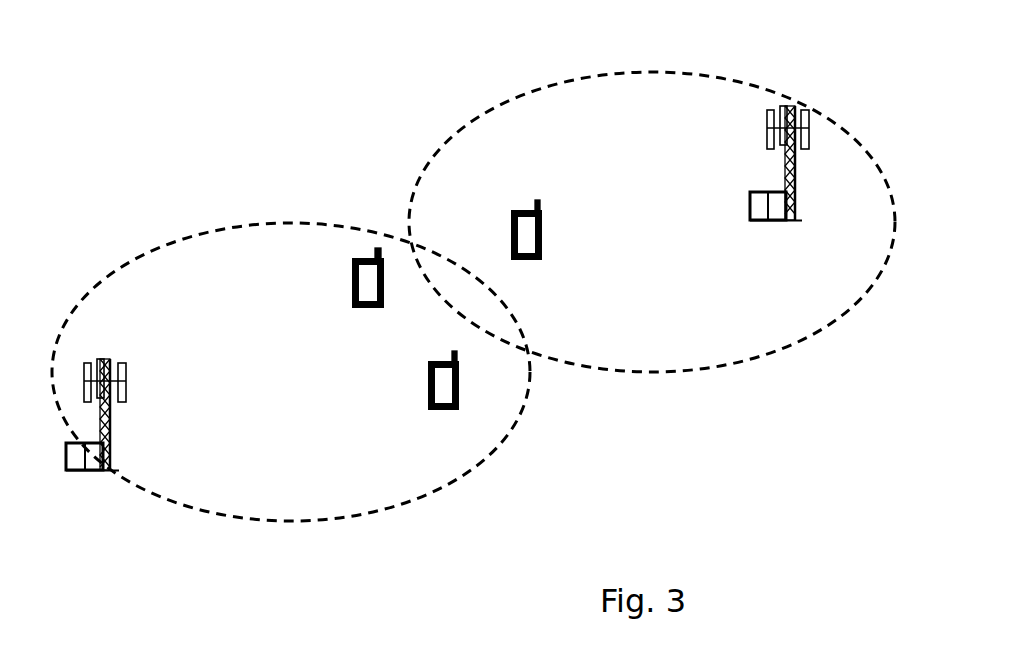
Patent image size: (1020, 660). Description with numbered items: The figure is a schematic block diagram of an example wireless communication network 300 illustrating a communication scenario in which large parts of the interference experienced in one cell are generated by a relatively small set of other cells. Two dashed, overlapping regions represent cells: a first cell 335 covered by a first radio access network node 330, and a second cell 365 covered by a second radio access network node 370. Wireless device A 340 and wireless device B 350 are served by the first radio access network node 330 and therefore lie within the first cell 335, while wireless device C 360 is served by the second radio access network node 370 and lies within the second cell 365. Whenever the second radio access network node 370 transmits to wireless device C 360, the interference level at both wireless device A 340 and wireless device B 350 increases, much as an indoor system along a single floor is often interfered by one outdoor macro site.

The wireless communication network 300 is at (133, 194).
The first radio access network node 330 is at (107, 358).
The first cell 335 is at (235, 518).
The wireless device A 340 is at (445, 411).
The wireless device B 350 is at (366, 258).
The wireless device C 360 is at (525, 208).
The second cell 365 is at (718, 373).
The second radio access network node 370 is at (789, 103).